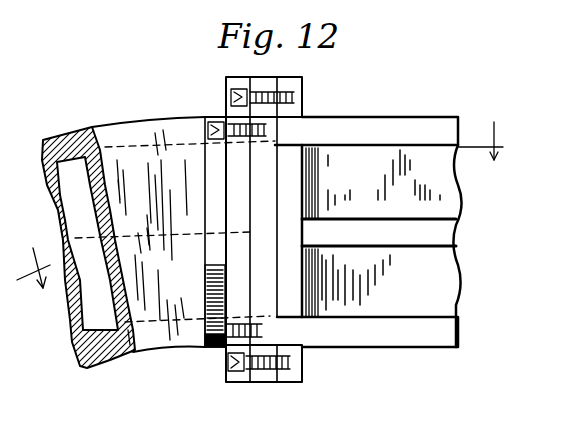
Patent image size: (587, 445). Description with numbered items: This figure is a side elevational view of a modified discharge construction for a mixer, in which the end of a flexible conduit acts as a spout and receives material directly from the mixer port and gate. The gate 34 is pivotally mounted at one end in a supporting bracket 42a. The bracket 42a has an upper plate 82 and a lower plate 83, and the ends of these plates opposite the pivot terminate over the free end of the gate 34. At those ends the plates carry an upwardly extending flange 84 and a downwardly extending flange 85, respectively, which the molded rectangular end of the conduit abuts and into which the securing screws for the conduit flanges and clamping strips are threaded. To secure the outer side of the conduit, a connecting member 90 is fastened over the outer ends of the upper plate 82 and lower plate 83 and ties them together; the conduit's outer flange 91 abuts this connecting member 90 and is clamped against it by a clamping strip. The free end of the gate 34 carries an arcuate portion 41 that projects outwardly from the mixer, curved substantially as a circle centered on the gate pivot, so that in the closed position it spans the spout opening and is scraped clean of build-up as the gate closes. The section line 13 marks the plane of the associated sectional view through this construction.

The section line 13 is at (267, 202).
The gate 34 is at (440, 277).
The arcuate portion 41 is at (292, 193).
The bracket 42a is at (457, 114).
The upper plate 82 is at (378, 116).
The lower plate 83 is at (410, 348).
The upwardly extending flange 84 is at (303, 86).
The downwardly extending flange 85 is at (303, 368).
The connecting member 90 is at (262, 290).
The flange 91 is at (238, 158).